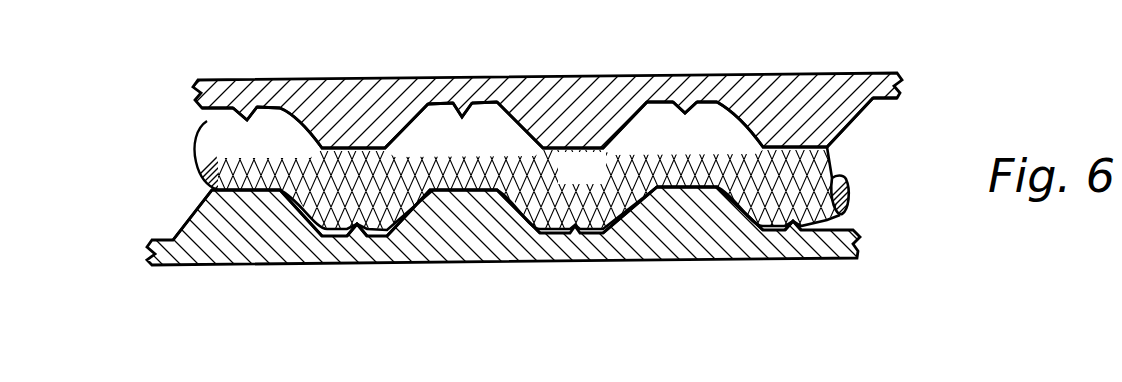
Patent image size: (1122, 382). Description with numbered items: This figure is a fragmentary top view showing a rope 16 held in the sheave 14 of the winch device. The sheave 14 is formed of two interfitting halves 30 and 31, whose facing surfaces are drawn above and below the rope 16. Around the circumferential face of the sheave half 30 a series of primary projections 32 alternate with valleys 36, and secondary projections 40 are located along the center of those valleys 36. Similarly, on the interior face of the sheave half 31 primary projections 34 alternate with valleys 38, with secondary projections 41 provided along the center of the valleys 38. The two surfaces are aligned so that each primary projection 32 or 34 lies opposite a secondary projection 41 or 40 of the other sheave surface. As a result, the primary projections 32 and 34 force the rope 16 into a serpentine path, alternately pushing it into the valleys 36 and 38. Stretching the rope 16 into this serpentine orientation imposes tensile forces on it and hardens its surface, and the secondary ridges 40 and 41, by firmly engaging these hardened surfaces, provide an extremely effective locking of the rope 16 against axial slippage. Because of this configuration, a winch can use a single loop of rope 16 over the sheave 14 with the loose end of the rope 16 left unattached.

The sheave 14 is at (777, 77).
The rope 16 is at (820, 167).
The sheave half 30 is at (857, 73).
The sheave half 31 is at (668, 238).
The primary projections 32 is at (578, 147).
The primary projections 34 is at (472, 193).
The valleys 36 is at (207, 120).
The valleys 38 is at (535, 214).
The secondary projections 40 is at (250, 106).
The secondary projections 41 is at (358, 232).